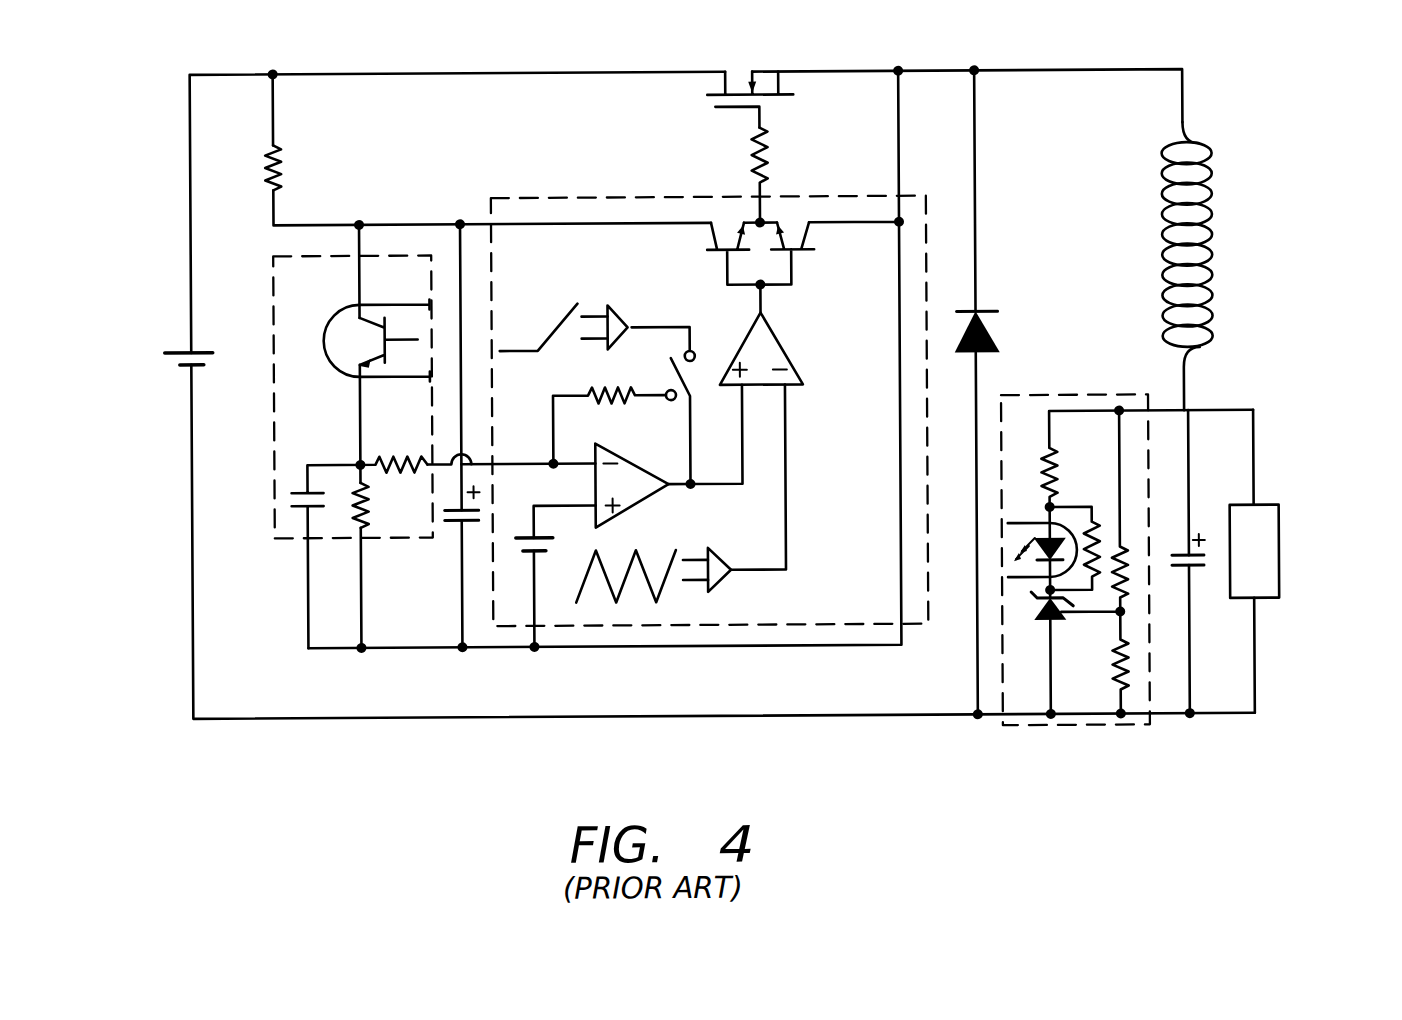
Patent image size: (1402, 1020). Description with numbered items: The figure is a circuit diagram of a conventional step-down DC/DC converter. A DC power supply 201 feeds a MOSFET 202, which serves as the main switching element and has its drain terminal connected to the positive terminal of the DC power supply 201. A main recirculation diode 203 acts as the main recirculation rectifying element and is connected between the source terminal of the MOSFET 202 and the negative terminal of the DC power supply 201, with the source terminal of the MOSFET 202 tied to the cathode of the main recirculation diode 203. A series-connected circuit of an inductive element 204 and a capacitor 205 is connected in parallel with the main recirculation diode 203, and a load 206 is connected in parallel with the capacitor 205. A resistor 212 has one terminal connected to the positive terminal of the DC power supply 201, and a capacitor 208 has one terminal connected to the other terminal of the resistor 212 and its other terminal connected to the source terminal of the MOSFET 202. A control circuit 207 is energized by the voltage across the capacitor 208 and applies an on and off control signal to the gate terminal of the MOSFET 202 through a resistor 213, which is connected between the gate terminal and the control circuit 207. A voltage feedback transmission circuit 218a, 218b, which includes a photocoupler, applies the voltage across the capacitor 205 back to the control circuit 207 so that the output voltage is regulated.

The DC power supply 201 is at (187, 349).
The MOSFET 202 is at (770, 72).
The main recirculation diode 203 is at (993, 309).
The inductive element 204 is at (1207, 125).
The capacitor 205 is at (1191, 571).
The load 206 is at (1278, 531).
The control circuit 207 is at (566, 197).
The capacitor 208 is at (455, 522).
The resistor 212 is at (266, 168).
The resistor 213 is at (770, 150).
The voltage feedback transmission circuit 218a is at (1014, 397).
The voltage feedback transmission circuit 218b is at (273, 508).